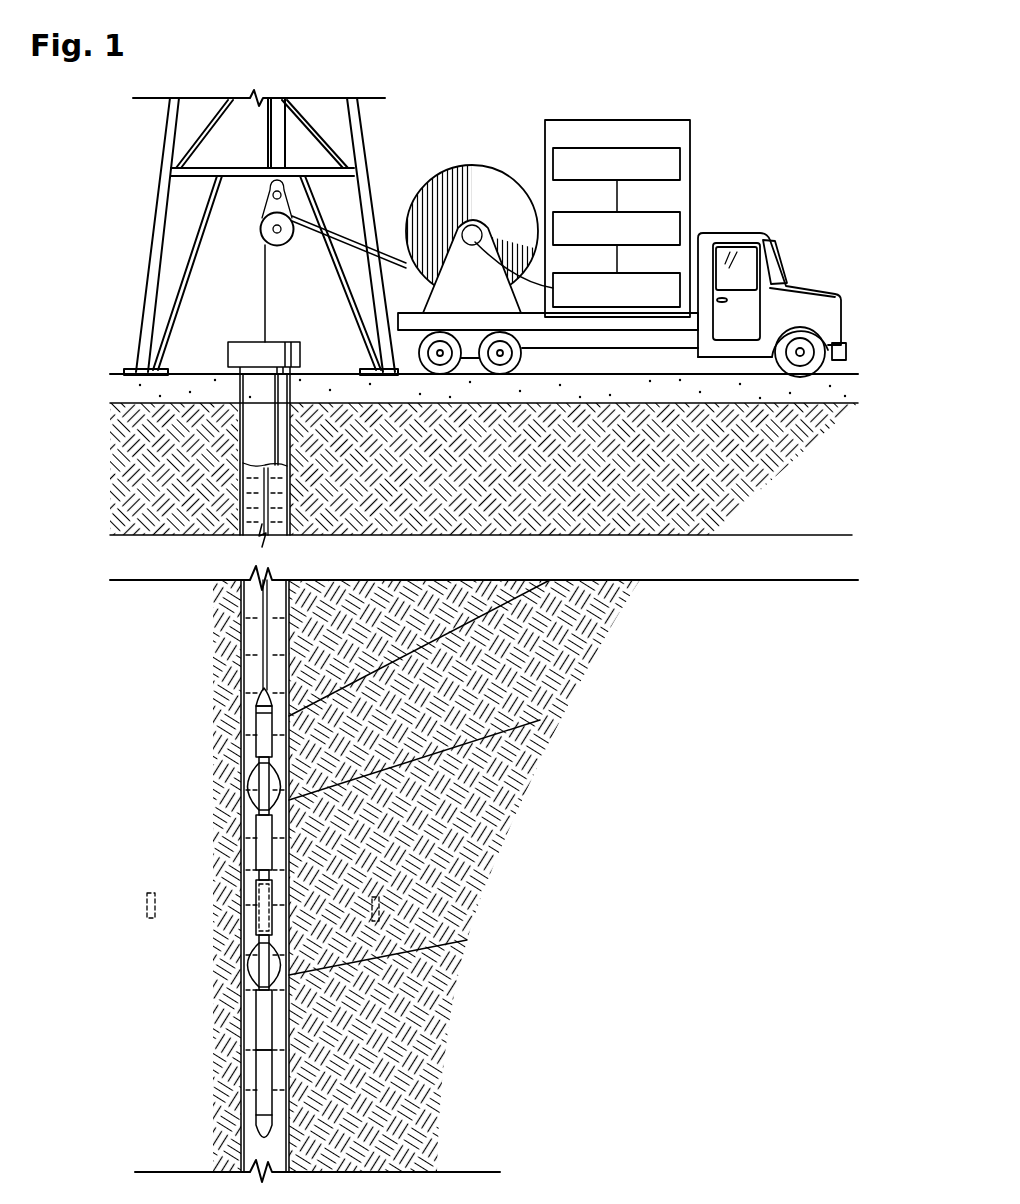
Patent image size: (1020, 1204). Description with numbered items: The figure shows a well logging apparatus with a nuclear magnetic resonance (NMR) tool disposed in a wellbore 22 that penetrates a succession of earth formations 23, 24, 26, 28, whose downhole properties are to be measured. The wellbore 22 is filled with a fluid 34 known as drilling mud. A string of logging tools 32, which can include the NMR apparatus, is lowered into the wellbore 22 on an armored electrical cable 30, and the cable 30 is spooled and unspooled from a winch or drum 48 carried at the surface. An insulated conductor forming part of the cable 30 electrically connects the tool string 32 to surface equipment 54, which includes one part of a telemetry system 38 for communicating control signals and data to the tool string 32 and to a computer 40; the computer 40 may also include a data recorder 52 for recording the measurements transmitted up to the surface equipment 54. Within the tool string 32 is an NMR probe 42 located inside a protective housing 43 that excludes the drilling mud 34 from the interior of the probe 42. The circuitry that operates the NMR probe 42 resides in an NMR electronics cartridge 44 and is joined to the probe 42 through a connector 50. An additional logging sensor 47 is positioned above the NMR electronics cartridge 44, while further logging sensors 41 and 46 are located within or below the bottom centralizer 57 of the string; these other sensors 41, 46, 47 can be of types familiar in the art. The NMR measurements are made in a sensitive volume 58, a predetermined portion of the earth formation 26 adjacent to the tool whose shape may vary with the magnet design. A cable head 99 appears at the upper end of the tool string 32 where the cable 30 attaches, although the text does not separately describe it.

The wellbore 22 is at (252, 1112).
The earth formation 23 is at (388, 632).
The earth formation 24 is at (388, 737).
The earth formation 26 is at (388, 849).
The earth formation 28 is at (388, 1059).
The armored electrical cable 30 is at (263, 660).
The string of logging tools 32 is at (150, 1108).
The fluid 34 is at (257, 617).
The telemetry system 38 is at (633, 273).
The computer 40 is at (633, 212).
The logging sensor 41 is at (258, 1018).
The NMR probe 42 is at (258, 922).
The protective housing 43 is at (258, 905).
The NMR electronics cartridge 44 is at (258, 850).
The logging sensor 46 is at (258, 1075).
The logging sensor 47 is at (250, 737).
The winch or drum 48 is at (473, 168).
The connector 50 is at (258, 878).
The data recorder 52 is at (633, 148).
The surface equipment 54 is at (634, 119).
The bottom centralizer 57 is at (243, 967).
The sensitive volume 58 is at (151, 919).
The cable head 99 is at (258, 700).